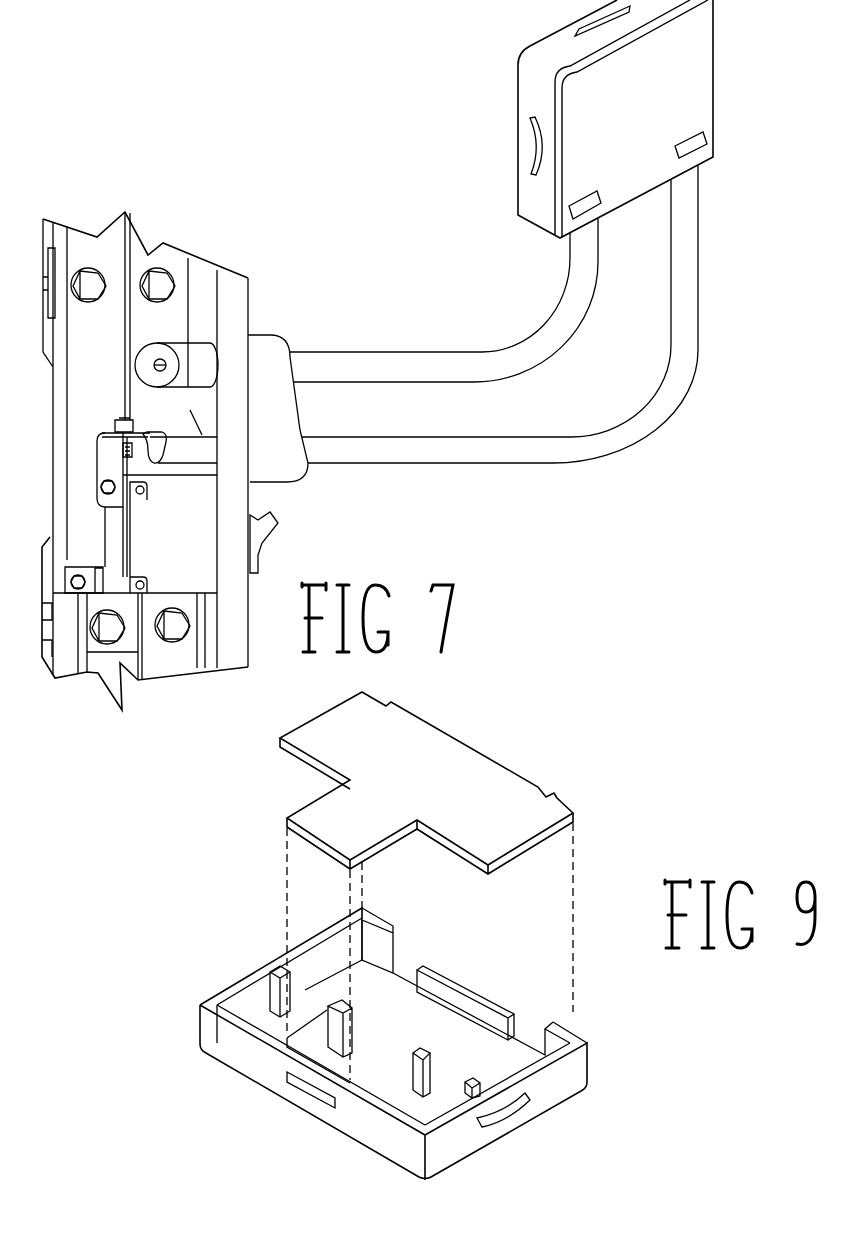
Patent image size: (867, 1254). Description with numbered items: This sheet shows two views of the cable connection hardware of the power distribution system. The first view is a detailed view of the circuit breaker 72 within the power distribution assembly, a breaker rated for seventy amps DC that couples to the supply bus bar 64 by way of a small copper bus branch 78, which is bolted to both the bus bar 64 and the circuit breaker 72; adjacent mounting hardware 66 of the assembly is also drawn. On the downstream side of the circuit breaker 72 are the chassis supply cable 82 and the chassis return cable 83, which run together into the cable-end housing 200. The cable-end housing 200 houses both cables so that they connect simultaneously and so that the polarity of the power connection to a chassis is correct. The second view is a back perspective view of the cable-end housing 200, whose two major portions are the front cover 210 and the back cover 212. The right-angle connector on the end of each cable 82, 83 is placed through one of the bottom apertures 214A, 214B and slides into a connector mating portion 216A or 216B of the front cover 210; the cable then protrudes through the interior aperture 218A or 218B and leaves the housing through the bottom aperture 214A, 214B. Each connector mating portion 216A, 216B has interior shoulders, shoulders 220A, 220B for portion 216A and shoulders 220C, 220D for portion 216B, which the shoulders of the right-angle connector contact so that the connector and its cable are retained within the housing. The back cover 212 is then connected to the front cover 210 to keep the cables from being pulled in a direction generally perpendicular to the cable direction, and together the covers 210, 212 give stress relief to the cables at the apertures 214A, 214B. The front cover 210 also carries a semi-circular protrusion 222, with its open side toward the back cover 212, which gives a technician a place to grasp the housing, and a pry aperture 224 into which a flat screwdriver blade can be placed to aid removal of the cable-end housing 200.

In FIG. 7, the cable-end housing 200 is at (535, 92).
In FIG. 9, the cable-end housing 200 is at (602, 1054).
In FIG. 7, the chassis supply cable 82 is at (670, 410).
In FIG. 7, the chassis return cable 83 is at (540, 348).
In FIG. 7, the supply bus bar 64 is at (95, 250).
In FIG. 7, the mounting plate 66 is at (163, 258).
In FIG. 7, the circuit breaker 72 is at (186, 550).
In FIG. 7, the bus branch 78 is at (93, 593).
In FIG. 9, the front cover 210 is at (563, 1095).
In FIG. 9, the back cover 212 is at (539, 787).
In FIG. 9, the bottom aperture 214A is at (405, 950).
In FIG. 9, the bottom aperture 214B is at (520, 1032).
In FIG. 9, the connector mating portion 216A is at (245, 993).
In FIG. 9, the connector mating portion 216B is at (400, 1090).
In FIG. 9, the interior aperture 218A is at (323, 970).
In FIG. 9, the interior aperture 218B is at (441, 1097).
In FIG. 9, the interior shoulder 220A is at (250, 998).
In FIG. 9, the interior shoulder 220B is at (327, 1008).
In FIG. 9, the interior shoulder 220C is at (450, 1043).
In FIG. 9, the interior shoulder 220D is at (468, 1100).
In FIG. 9, the semi-circular protrusion 222 is at (479, 1130).
In FIG. 9, the pry aperture 224 is at (308, 1092).